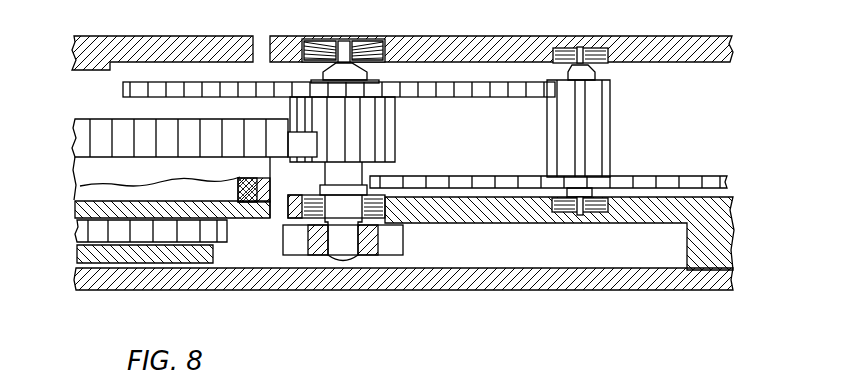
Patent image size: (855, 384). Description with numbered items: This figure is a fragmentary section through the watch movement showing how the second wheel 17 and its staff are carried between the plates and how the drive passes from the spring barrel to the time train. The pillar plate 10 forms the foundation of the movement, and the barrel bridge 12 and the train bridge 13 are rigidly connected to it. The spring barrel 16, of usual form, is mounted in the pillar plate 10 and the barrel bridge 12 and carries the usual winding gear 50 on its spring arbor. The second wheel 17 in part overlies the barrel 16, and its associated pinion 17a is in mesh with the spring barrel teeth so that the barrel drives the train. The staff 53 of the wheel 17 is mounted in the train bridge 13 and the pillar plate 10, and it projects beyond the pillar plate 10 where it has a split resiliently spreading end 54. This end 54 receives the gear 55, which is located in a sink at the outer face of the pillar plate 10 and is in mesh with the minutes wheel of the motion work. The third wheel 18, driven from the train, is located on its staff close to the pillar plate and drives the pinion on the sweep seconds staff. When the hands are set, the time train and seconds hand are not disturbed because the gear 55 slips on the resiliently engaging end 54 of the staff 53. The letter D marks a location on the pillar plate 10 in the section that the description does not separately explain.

The pillar plate 10 is at (187, 277).
The barrel bridge 12 is at (173, 36).
The train bridge 13 is at (500, 43).
The spring barrel 16 is at (273, 207).
The second wheel 17 is at (490, 98).
The pinion 17a is at (390, 148).
The third wheel 18 is at (677, 182).
The winding gear 50 is at (223, 232).
The staff 53 is at (345, 40).
The split resiliently spreading end 54 is at (343, 256).
The gear 55 is at (397, 240).
The reference point D is at (290, 282).